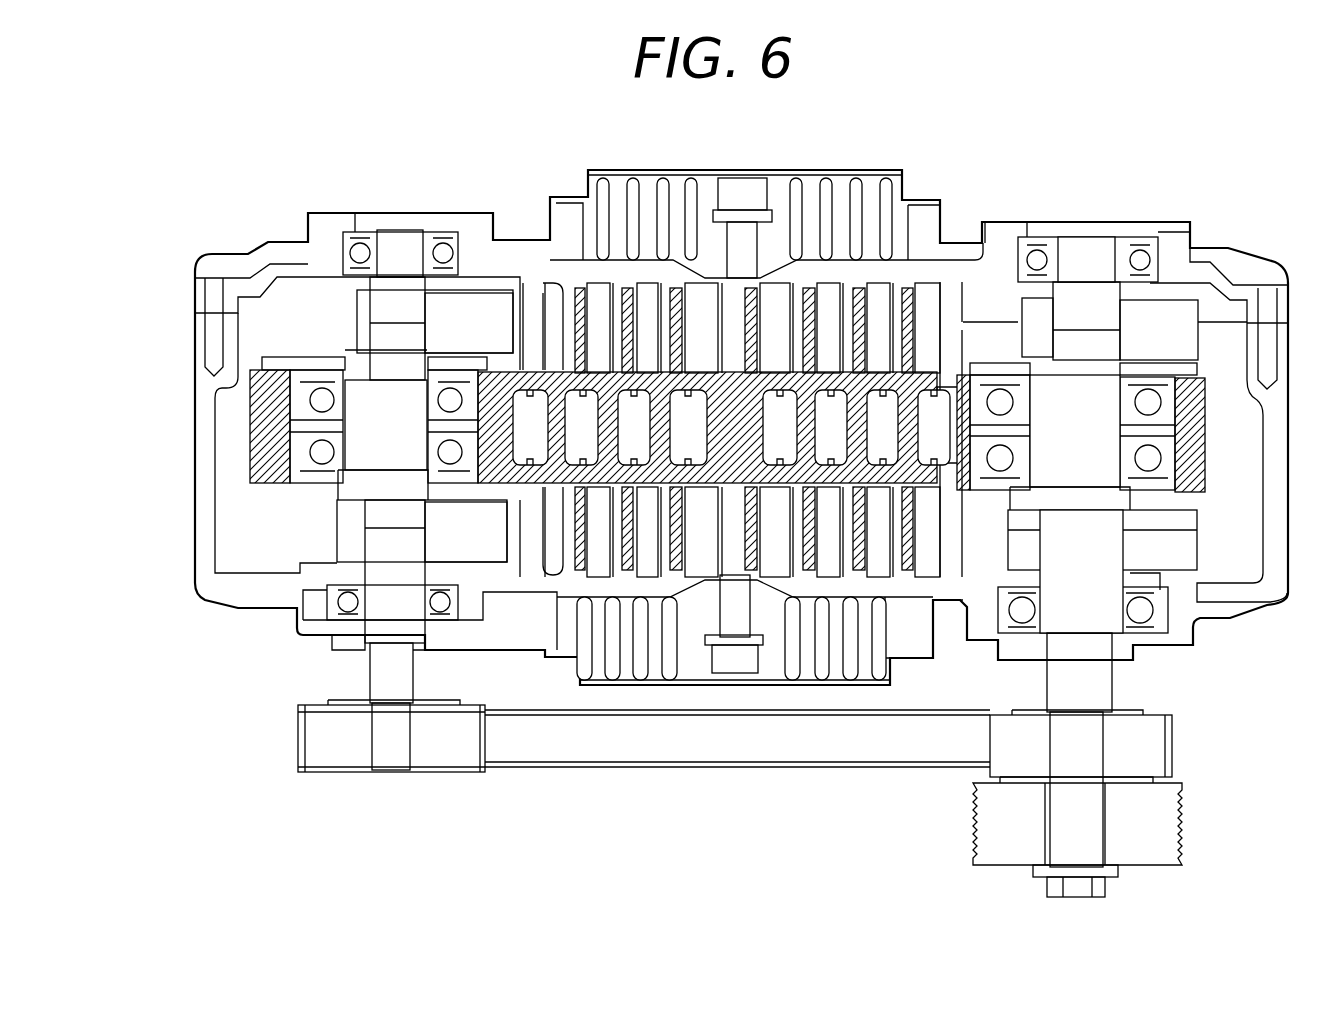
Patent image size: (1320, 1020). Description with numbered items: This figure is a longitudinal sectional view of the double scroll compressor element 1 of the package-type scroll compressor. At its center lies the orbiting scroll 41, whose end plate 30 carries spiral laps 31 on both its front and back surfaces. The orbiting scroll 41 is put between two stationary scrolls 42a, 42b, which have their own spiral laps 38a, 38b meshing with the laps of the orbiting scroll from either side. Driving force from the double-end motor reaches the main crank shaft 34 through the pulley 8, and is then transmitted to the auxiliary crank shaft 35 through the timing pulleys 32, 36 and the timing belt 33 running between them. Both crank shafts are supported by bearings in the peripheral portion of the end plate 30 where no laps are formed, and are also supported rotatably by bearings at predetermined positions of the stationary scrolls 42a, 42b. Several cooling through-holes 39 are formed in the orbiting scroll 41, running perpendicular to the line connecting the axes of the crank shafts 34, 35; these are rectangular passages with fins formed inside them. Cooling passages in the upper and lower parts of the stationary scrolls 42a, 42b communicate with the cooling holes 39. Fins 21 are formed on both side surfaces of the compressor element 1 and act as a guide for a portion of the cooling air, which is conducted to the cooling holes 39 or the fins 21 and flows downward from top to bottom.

The compressor element 1 is at (213, 606).
The pulley 8 is at (1165, 822).
The fins 21 is at (870, 175).
The end plate 30 is at (547, 368).
The spiral laps 31 is at (688, 305).
The timing pulley 32 is at (1147, 748).
The timing belt 33 is at (585, 765).
The main crank shaft 34 is at (1095, 683).
The auxiliary crank shaft 35 is at (385, 677).
The timing pulley 36 is at (315, 737).
The spiral lap 38a is at (664, 305).
The spiral lap 38b is at (567, 547).
The cooling through-holes 39 is at (773, 410).
The orbiting scroll 41 is at (1215, 290).
The stationary scroll 42a is at (1000, 236).
The stationary scroll 42b is at (985, 615).